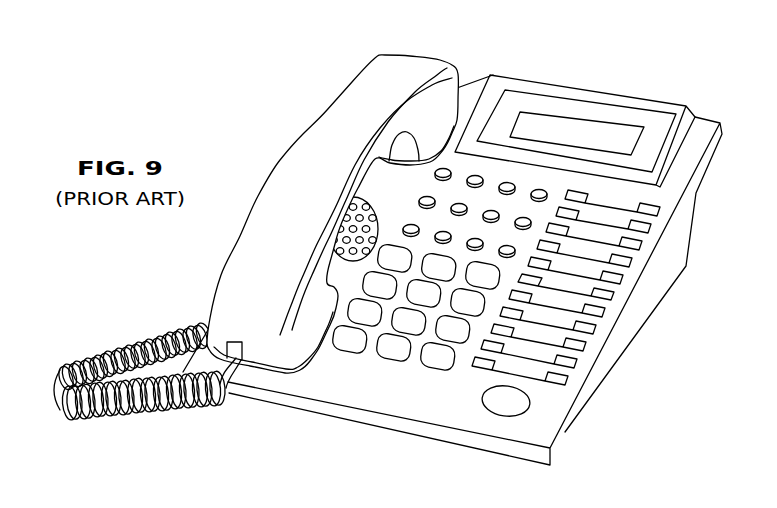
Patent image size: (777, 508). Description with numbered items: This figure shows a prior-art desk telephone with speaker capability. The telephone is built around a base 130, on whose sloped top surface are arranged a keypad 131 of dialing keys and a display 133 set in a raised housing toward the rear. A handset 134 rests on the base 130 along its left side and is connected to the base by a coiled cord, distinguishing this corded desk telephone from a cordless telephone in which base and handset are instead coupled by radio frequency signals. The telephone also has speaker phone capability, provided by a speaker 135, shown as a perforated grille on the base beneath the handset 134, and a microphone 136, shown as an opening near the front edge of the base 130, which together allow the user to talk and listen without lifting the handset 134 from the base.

The base 130 is at (465, 88).
The keypad 131 is at (388, 372).
The display 133 is at (590, 135).
The handset 134 is at (312, 152).
The speaker 135 is at (367, 220).
The microphone 136 is at (497, 408).